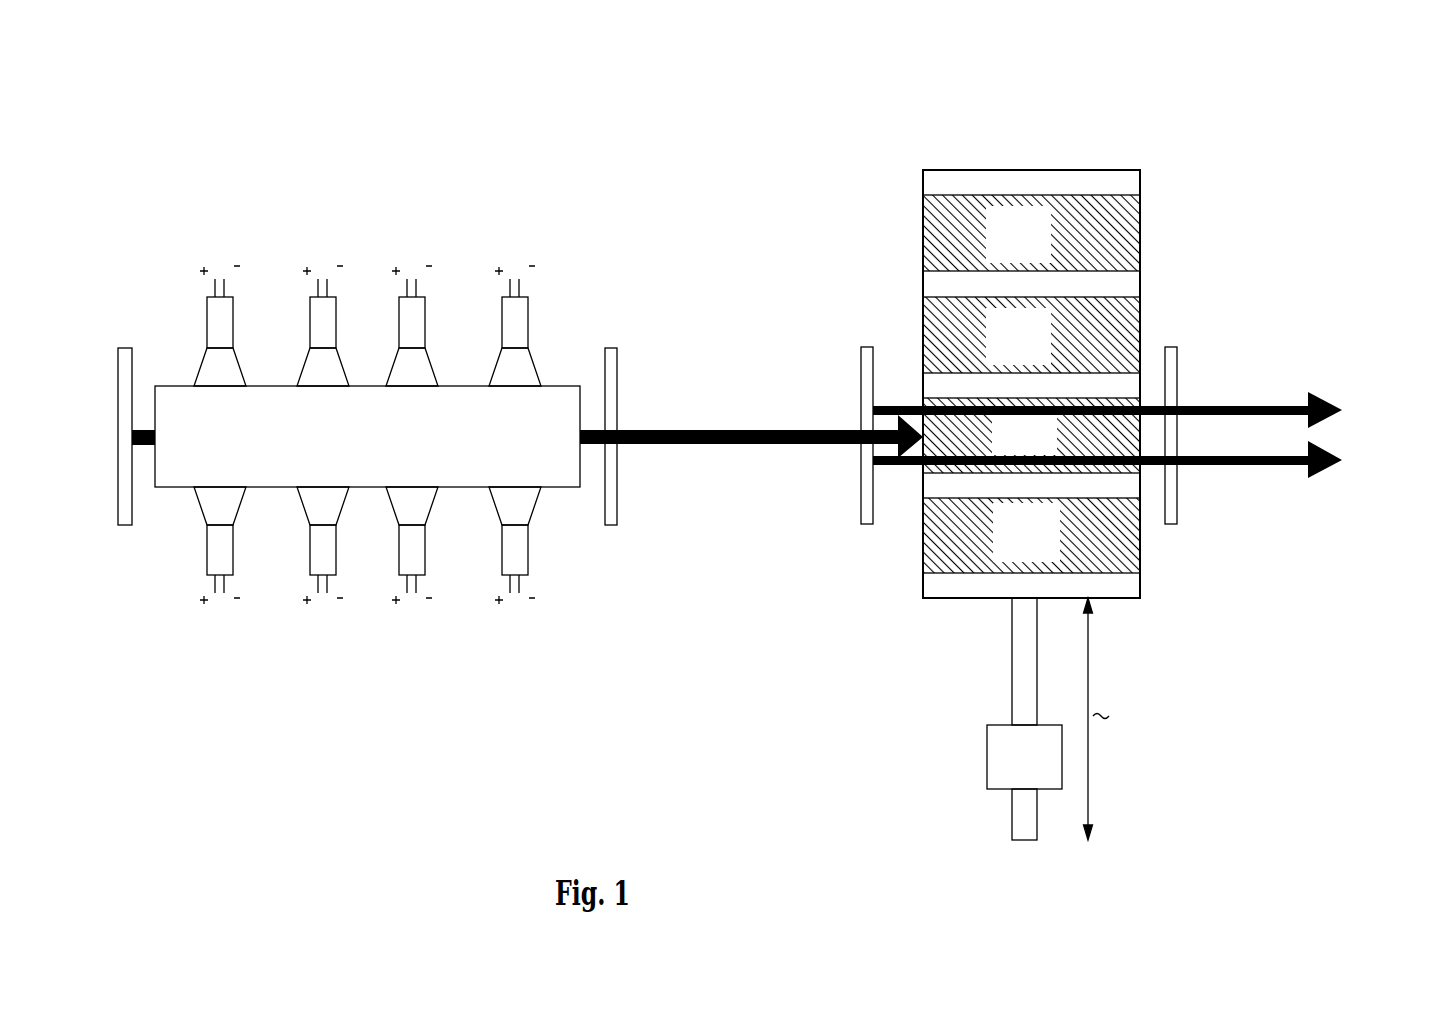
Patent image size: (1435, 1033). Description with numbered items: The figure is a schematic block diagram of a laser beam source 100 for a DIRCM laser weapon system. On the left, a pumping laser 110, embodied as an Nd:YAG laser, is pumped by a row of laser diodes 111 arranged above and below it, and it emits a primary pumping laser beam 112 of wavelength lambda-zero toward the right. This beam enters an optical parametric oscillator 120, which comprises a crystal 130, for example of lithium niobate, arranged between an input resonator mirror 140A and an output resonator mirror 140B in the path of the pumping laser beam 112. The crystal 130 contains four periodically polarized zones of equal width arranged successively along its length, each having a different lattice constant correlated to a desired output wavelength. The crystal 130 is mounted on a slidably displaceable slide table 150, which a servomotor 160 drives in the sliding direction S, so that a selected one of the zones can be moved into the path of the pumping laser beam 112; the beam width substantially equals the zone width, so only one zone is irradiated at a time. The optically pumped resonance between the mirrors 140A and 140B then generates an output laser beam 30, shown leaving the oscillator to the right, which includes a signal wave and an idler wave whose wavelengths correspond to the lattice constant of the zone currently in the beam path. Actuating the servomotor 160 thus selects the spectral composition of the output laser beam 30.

The laser beam source 100 is at (545, 190).
The pumping laser 110 is at (297, 423).
The laser diodes 111 is at (503, 562).
The pumping laser beam 112 is at (707, 442).
The optical parametric oscillator 120 is at (886, 274).
The crystal 130 is at (1037, 183).
The input resonator mirror 140A is at (861, 372).
The output resonator mirror 140B is at (1178, 372).
The slide table 150 is at (1140, 562).
The servomotor 160 is at (987, 735).
The output laser beam 30 is at (1255, 413).